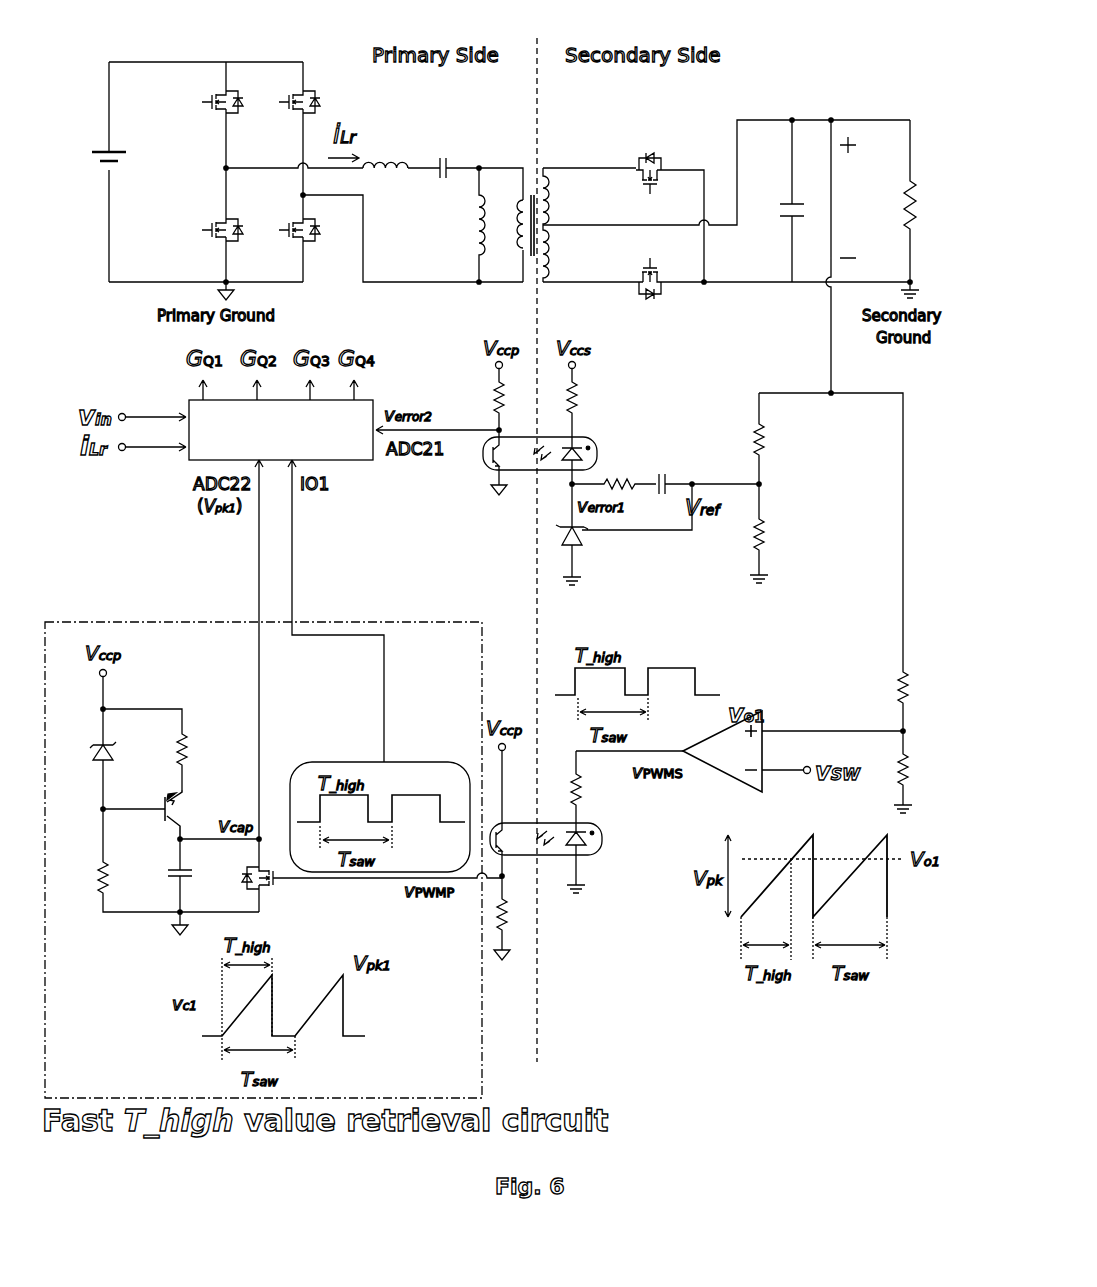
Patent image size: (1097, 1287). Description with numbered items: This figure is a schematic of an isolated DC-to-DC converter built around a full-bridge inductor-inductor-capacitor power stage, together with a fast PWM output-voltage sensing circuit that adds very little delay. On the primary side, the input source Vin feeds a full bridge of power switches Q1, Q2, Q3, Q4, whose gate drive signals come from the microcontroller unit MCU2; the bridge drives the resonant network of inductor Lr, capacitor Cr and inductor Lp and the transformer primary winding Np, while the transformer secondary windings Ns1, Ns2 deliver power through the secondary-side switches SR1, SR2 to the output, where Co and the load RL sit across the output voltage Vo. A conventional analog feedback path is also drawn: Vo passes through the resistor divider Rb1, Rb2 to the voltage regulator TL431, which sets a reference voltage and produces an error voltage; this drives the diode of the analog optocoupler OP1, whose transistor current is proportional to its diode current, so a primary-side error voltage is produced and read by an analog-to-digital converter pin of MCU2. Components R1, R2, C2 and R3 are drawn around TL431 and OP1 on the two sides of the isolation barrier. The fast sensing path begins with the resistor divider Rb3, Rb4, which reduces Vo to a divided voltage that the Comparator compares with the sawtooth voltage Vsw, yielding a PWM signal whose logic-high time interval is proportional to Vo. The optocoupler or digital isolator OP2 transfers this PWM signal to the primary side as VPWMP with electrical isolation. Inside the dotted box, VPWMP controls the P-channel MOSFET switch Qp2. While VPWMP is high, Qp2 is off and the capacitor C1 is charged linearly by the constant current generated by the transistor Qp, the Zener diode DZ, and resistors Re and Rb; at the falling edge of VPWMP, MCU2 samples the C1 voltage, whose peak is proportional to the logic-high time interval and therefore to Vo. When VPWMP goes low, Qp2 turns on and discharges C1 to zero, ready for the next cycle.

The input voltage source Vin is at (124, 143).
The power switch Q1 is at (218, 115).
The power switch Q2 is at (218, 244).
The power switch Q3 is at (294, 115).
The power switch Q4 is at (294, 244).
The resonant inductor Lr is at (385, 187).
The resonant capacitor Cr is at (443, 185).
The magnetizing inductor Lp is at (462, 225).
The transformer primary winding Np is at (514, 223).
The transformer secondary winding Ns1 is at (569, 196).
The transformer secondary winding Ns2 is at (569, 253).
The synchronous rectifier 1 SR1 is at (668, 161).
The synchronous rectifier 2 SR2 is at (668, 270).
The output capacitor Co is at (774, 201).
The output voltage Vo is at (853, 256).
The load resistor RL is at (930, 201).
The resistor divider Rb1 is at (782, 438).
The resistor divider Rb2 is at (782, 529).
The resistor divider Rb3 is at (926, 688).
The resistor divider Rb4 is at (926, 770).
The resistor R1 is at (589, 403).
The compensation resistor R2 is at (614, 468).
The compensation capacitor C2 is at (709, 471).
The resistor R3 is at (479, 403).
The voltage regulator TL431 is at (624, 523).
The analog optocoupler OP1 is at (474, 473).
The optocoupler or digital isolator OP2 is at (600, 955).
The microcontroller unit MCU2 is at (281, 430).
The comparator Comparator is at (793, 762).
The Zener diode DZ is at (87, 756).
The resistor Re is at (162, 760).
The transistor Qp is at (190, 811).
The resistor Rb is at (83, 878).
The capacitor C1 is at (162, 875).
The P-channel MOSFET switch Qp2 is at (273, 878).